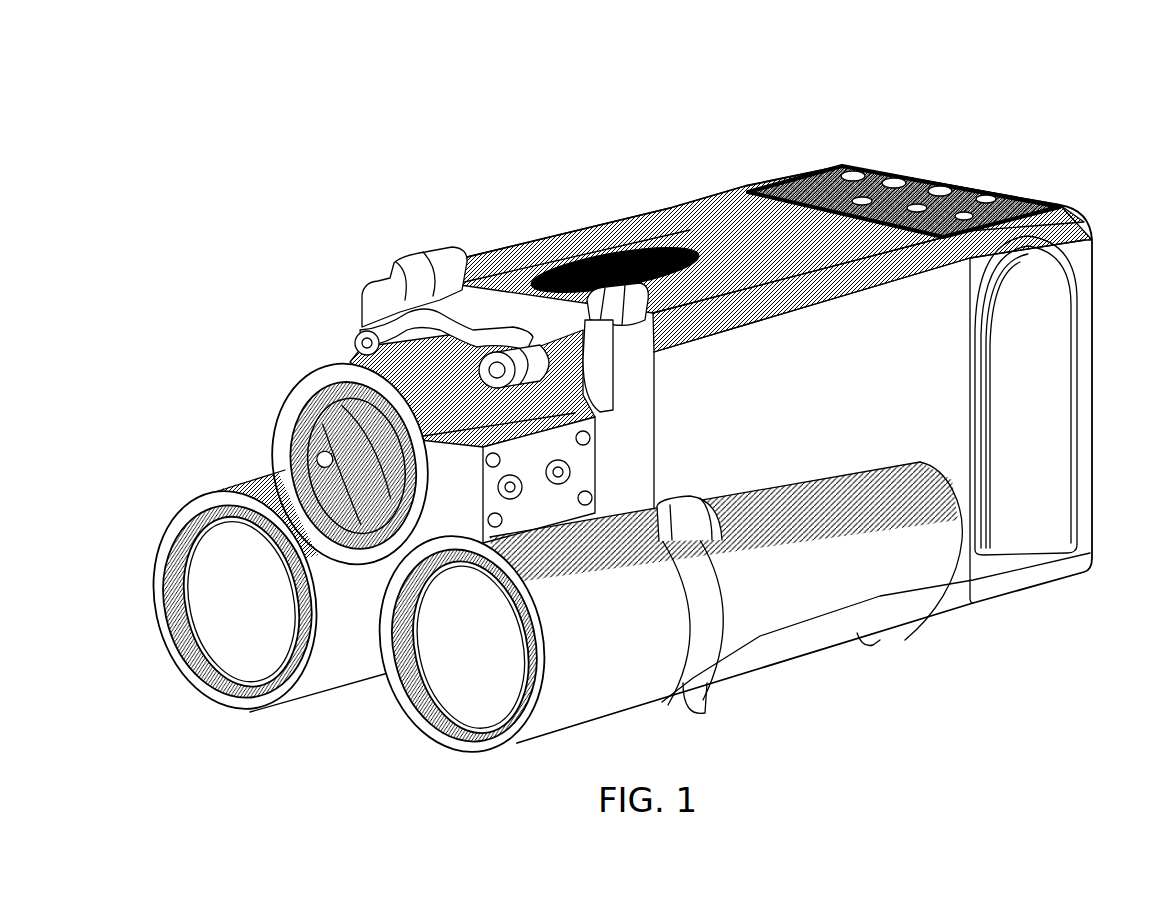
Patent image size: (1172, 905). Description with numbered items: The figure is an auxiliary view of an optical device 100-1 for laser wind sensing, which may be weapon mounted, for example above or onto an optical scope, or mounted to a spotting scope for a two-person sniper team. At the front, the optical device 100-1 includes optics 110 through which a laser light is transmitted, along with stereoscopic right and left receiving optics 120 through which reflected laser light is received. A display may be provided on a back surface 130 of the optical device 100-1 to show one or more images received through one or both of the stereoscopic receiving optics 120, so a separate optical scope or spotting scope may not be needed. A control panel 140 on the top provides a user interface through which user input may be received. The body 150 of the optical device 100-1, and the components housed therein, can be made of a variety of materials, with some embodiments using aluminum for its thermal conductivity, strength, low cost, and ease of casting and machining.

The optical device 100-1 is at (1064, 122).
The optics 110 is at (313, 437).
The stereoscopic receiving optics 120 is at (430, 673).
The back surface 130 is at (1102, 311).
The control panel 140 is at (810, 192).
The body 150 is at (830, 425).